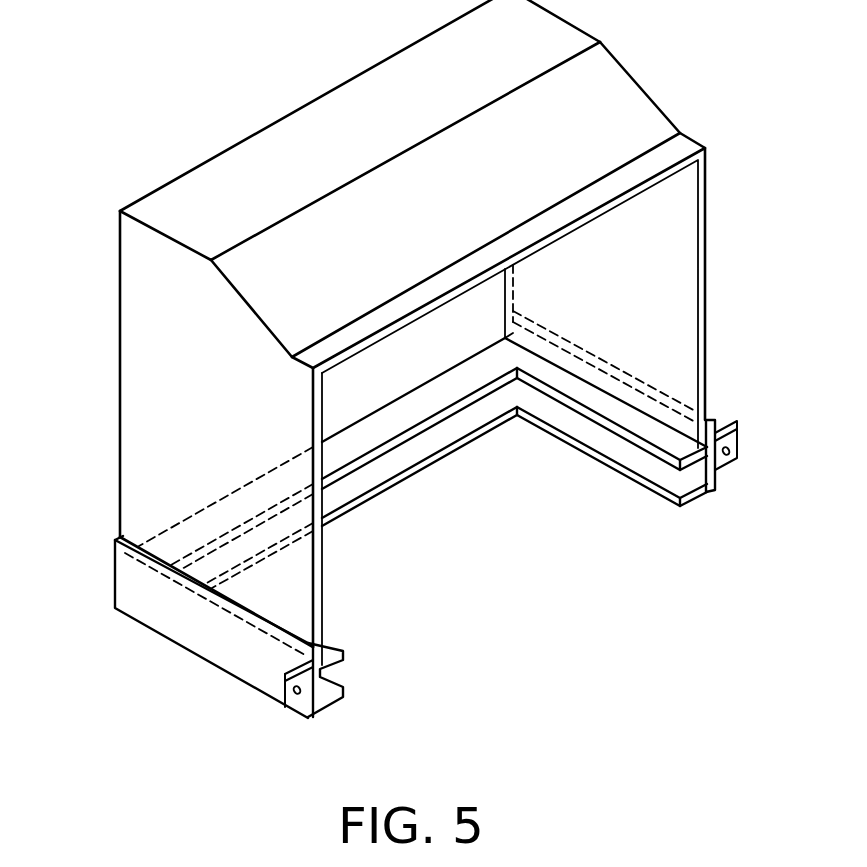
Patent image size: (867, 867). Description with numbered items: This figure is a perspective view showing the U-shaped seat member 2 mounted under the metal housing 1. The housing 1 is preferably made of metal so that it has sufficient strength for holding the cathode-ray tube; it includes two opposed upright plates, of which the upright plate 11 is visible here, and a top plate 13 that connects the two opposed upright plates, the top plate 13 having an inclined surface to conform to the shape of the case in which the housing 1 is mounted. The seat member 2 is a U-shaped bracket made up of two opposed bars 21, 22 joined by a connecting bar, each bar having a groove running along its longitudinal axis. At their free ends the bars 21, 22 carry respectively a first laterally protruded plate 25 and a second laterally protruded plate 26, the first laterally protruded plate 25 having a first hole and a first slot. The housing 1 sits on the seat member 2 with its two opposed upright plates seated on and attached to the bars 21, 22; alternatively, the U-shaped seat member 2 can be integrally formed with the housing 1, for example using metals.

The housing 1 is at (387, 332).
The upright plate 11 is at (142, 338).
The top plate 13 is at (287, 133).
The seat member 2 is at (448, 528).
The bar 21 is at (600, 458).
The bar 22 is at (180, 647).
The first laterally protruded plate 25 is at (737, 440).
The second laterally protruded plate 26 is at (284, 680).